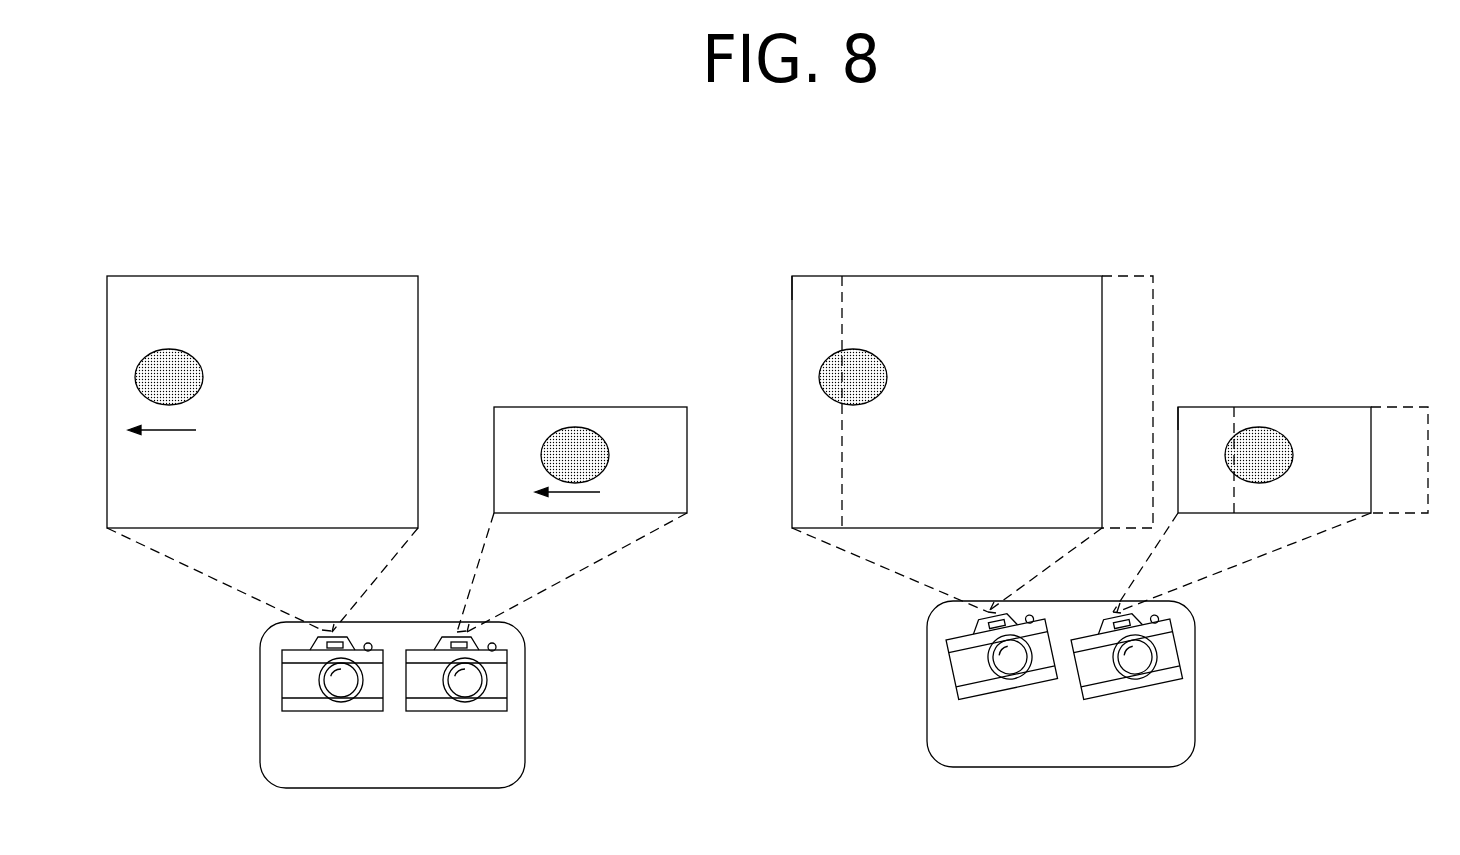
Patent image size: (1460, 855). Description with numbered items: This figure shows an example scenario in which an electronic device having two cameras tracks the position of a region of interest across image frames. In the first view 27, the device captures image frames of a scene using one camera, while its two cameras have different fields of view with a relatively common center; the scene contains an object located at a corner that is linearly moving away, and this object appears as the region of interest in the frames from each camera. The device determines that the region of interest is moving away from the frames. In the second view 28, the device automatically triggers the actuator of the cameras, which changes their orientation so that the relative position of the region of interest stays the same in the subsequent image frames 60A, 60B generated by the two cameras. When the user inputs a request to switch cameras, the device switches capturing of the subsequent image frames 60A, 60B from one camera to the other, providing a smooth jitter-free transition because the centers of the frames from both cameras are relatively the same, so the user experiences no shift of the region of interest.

The initial capture scenario 27 is at (466, 243).
The corrected capture scenario 28 is at (1009, 243).
The subsequent image frames 60A is at (804, 288).
The subsequent image frames 60B is at (1196, 415).